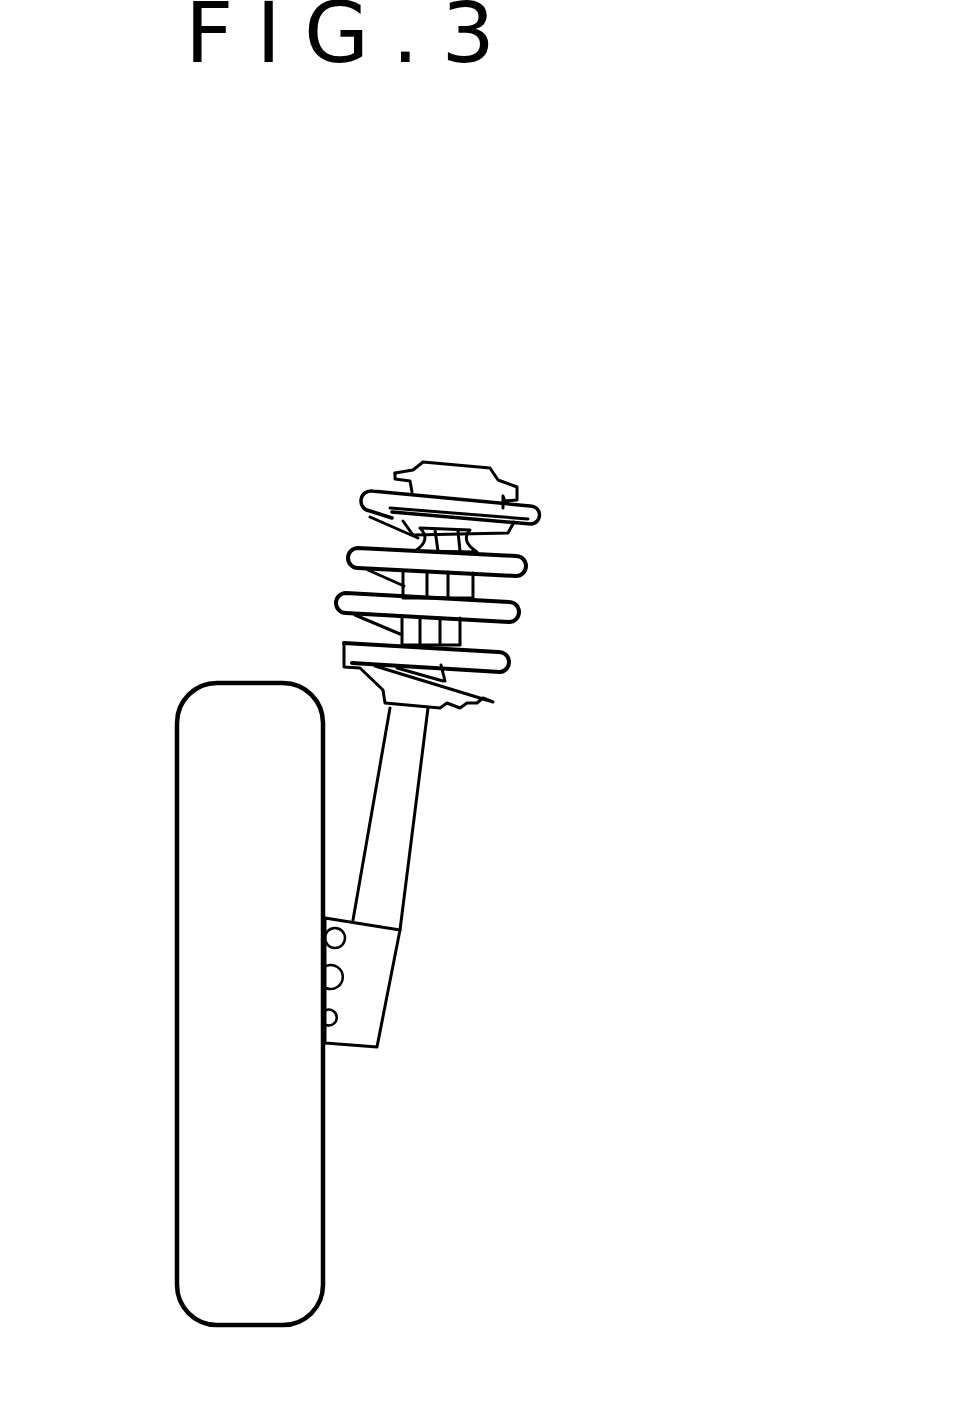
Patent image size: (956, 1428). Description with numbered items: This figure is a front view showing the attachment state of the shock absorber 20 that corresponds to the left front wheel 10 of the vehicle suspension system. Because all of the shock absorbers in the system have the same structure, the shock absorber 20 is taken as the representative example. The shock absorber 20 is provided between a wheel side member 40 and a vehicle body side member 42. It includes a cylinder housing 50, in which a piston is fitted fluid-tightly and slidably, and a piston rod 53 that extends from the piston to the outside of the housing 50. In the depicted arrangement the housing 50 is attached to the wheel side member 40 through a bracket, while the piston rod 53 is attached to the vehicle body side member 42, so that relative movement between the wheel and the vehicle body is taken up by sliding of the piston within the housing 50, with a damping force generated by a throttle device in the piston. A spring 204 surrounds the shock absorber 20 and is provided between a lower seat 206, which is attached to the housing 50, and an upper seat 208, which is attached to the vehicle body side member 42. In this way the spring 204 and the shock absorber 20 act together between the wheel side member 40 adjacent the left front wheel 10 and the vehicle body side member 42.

The left front wheel 10 is at (213, 1018).
The shock absorber 20 is at (437, 902).
The wheel side member 40 is at (333, 992).
The vehicle body side member 42 is at (445, 469).
The cylinder housing 50 is at (405, 806).
The piston rod 53 is at (457, 630).
The spring 204 is at (350, 548).
The lower seat 206 is at (483, 708).
The upper seat 208 is at (533, 520).